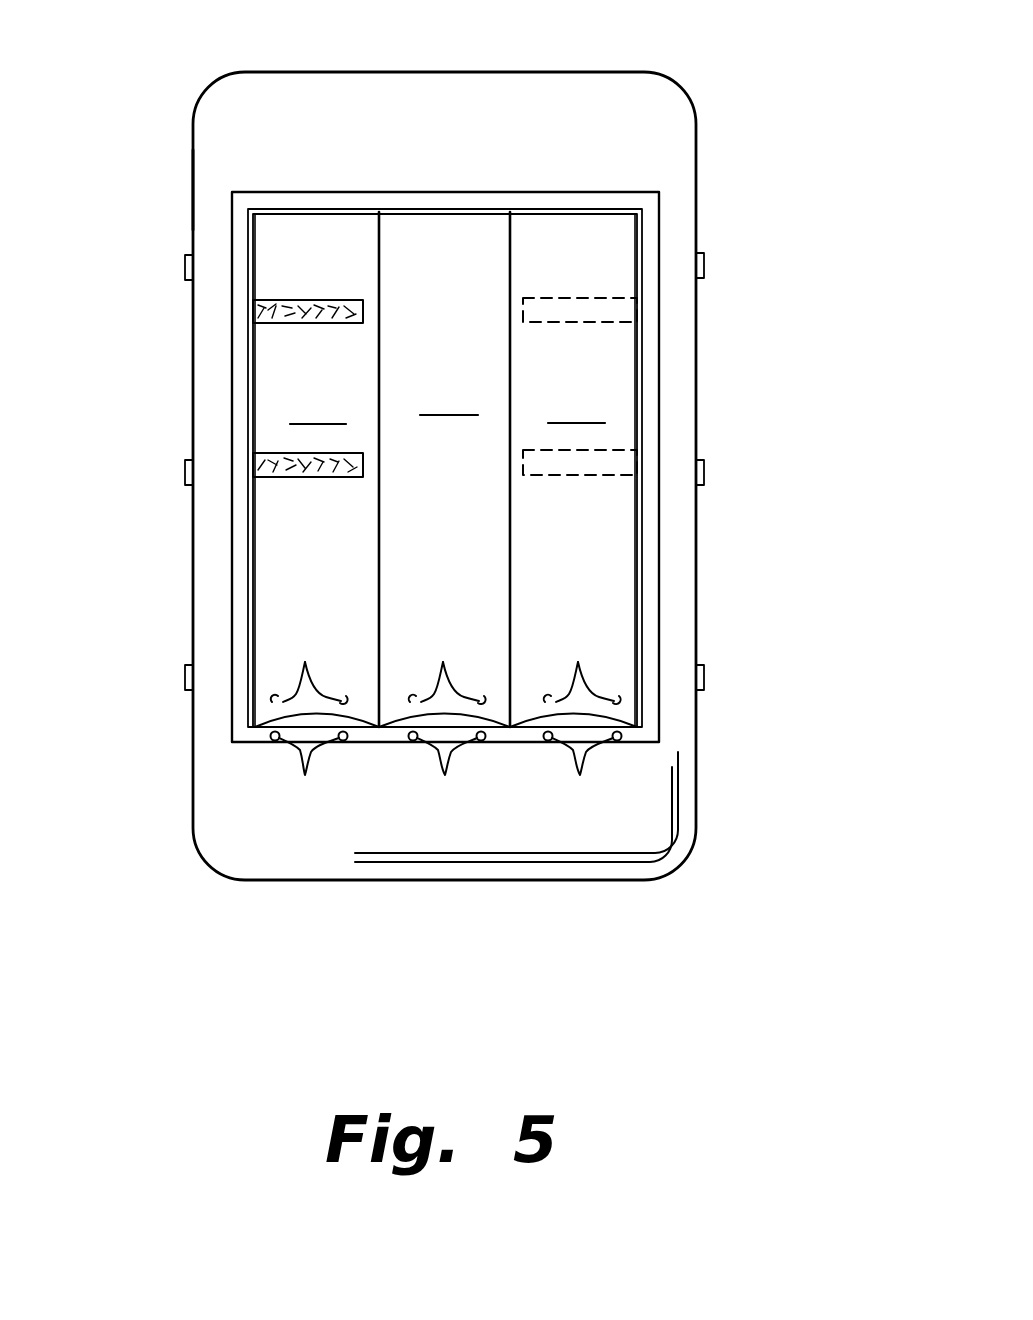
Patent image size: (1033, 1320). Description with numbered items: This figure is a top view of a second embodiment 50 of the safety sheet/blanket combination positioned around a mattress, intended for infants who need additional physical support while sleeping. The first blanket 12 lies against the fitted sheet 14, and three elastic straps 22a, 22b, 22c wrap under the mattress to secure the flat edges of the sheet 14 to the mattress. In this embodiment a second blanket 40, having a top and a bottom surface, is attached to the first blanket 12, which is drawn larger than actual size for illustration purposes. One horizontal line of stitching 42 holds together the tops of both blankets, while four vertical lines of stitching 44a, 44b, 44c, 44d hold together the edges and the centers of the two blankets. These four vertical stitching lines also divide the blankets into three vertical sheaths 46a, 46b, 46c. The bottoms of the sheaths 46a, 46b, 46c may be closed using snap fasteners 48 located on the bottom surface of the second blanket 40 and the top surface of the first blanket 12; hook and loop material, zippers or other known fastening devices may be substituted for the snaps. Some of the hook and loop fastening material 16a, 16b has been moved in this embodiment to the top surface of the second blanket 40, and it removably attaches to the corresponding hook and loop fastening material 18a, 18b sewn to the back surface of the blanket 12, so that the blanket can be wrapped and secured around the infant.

The blanket 12 is at (660, 235).
The sheet 14 is at (668, 80).
The hook and loop fastening material 16a is at (283, 323).
The hook and loop fastening material 16b is at (283, 477).
The hook and loop fastening material 18a is at (590, 322).
The hook and loop fastening material 18b is at (610, 475).
The elastic strap 22a is at (704, 263).
The elastic strap 22b is at (704, 474).
The elastic strap 22c is at (704, 676).
The second blanket 40 is at (643, 567).
The horizontal line of stitching 42 is at (533, 210).
The vertical line of stitching 44a is at (255, 618).
The vertical line of stitching 44b is at (380, 548).
The vertical line of stitching 44c is at (512, 575).
The vertical line of stitching 44d is at (643, 615).
The vertical sheath 46a is at (320, 407).
The vertical sheath 46b is at (450, 397).
The vertical sheath 46c is at (582, 405).
The snap fasteners 48 is at (446, 724).
The second embodiment 50 is at (192, 188).